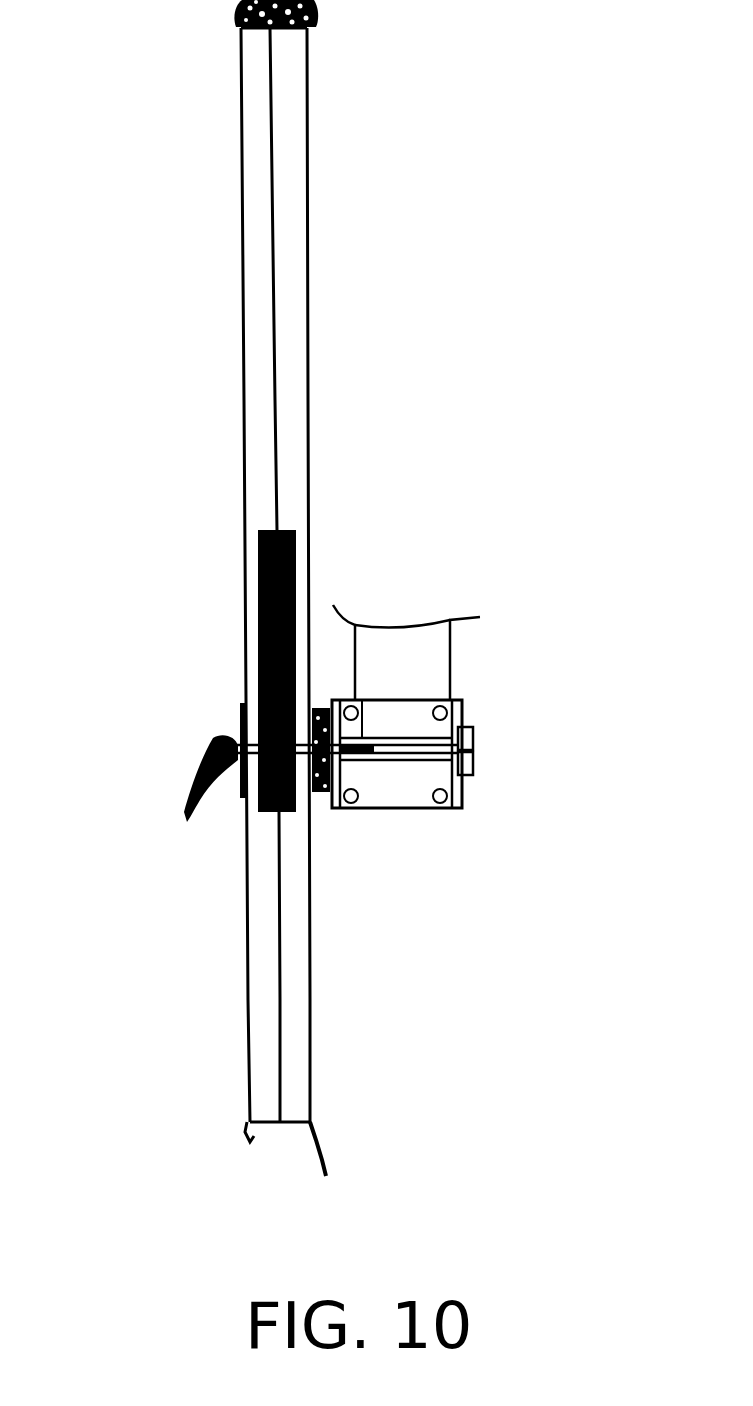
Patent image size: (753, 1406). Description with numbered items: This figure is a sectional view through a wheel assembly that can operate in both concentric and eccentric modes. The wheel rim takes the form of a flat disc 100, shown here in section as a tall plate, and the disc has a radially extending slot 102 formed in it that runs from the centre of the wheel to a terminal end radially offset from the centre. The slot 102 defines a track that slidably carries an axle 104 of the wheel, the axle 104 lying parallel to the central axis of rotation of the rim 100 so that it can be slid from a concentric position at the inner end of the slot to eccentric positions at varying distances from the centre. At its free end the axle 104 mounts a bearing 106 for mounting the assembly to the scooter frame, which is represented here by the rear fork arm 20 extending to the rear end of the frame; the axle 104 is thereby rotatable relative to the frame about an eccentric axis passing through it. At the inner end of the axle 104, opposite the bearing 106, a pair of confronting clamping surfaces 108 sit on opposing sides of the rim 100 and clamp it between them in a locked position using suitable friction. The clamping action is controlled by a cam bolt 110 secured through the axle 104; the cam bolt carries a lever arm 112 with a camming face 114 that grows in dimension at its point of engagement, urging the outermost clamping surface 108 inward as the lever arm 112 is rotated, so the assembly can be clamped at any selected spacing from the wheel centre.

The flat disc 100 is at (258, 251).
The radially extending slot 102 is at (248, 575).
The axle 104 is at (395, 750).
The bearing 106 is at (460, 783).
The clamping surfaces 108 is at (238, 785).
The cam bolt 110 is at (475, 738).
The lever arm 112 is at (208, 748).
The camming face 114 is at (238, 735).
The rear fork arm 20 is at (450, 655).